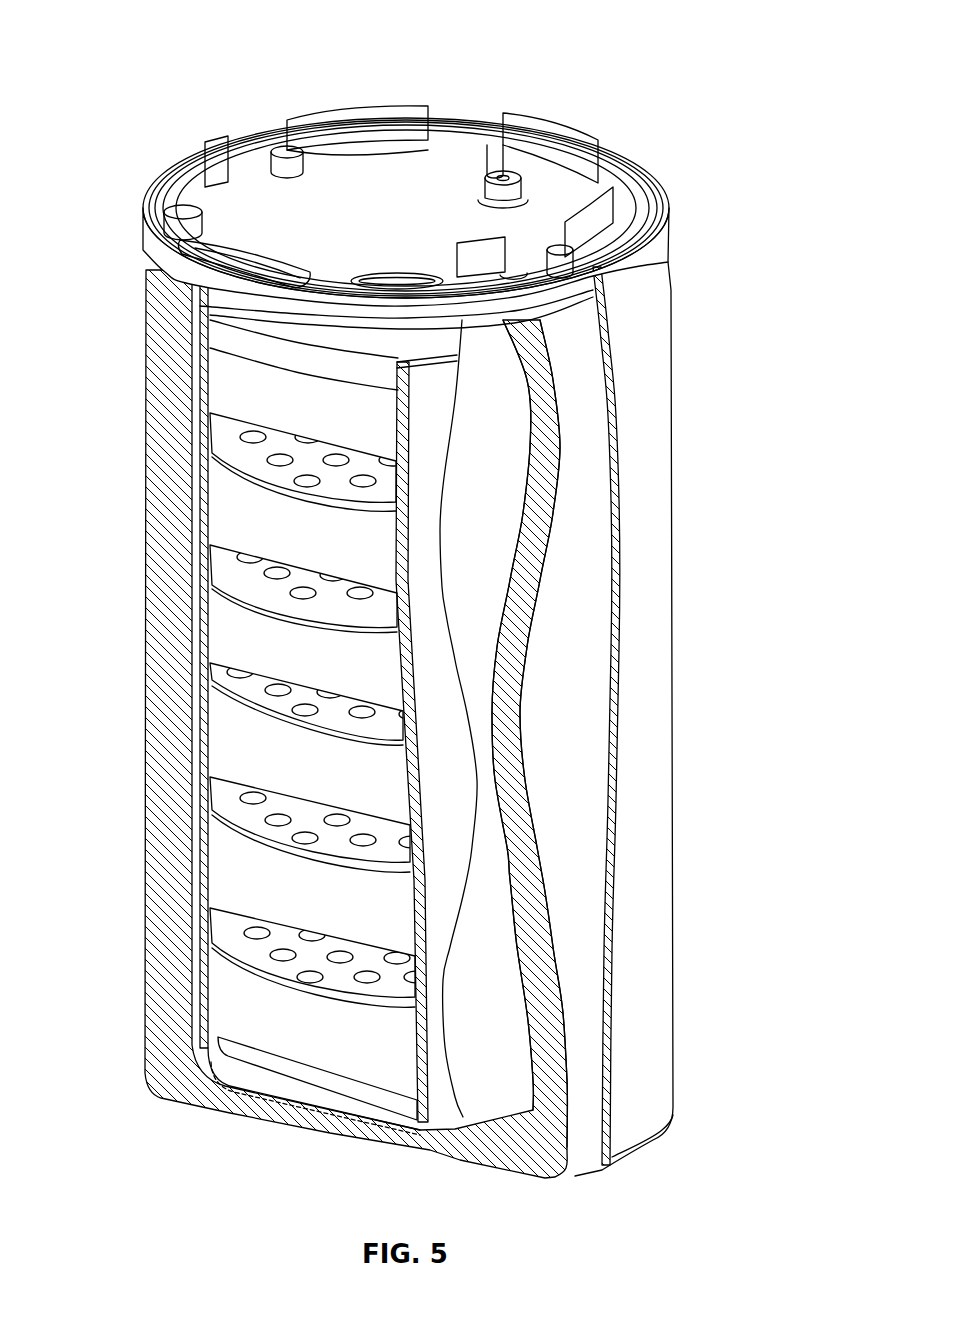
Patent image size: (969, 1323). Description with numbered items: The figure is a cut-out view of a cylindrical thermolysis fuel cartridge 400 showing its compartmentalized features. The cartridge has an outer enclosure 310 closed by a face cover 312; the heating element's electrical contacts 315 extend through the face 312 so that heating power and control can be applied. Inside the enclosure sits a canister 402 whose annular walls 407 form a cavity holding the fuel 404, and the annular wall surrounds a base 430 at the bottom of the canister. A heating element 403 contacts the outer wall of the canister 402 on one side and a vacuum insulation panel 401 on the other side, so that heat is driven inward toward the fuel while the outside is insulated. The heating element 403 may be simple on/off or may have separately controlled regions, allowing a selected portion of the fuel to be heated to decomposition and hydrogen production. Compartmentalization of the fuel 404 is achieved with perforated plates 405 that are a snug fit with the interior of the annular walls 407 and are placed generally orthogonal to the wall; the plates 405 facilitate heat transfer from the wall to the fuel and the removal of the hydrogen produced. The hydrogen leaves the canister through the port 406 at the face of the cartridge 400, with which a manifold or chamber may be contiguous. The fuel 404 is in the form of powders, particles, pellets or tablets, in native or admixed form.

The thermolysis fuel cartridge 400 is at (147, 48).
The contacts 315 is at (397, 106).
The port 406 is at (517, 190).
The face cover 312 is at (367, 231).
The fuel 404 is at (233, 392).
The perforated plates 405 is at (221, 808).
The vacuum insulation panel 401 is at (600, 432).
The heating element 403 is at (480, 557).
The canister 402 is at (443, 770).
The annular walls 407 is at (470, 815).
The base 430 is at (450, 1123).
The outer enclosure 310 is at (643, 985).